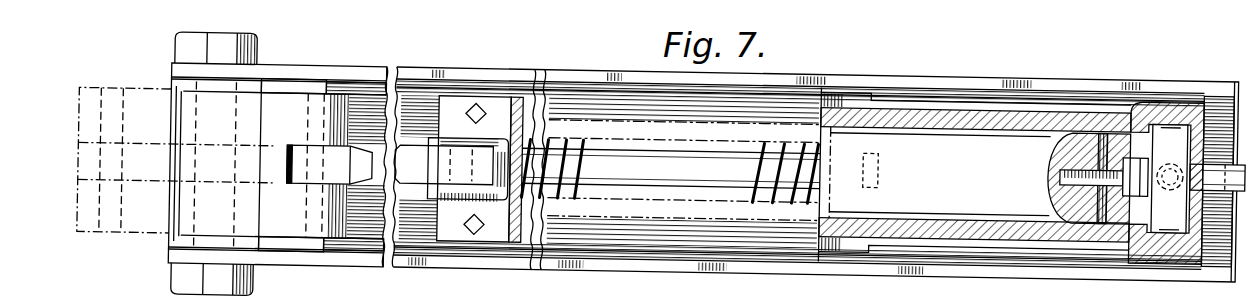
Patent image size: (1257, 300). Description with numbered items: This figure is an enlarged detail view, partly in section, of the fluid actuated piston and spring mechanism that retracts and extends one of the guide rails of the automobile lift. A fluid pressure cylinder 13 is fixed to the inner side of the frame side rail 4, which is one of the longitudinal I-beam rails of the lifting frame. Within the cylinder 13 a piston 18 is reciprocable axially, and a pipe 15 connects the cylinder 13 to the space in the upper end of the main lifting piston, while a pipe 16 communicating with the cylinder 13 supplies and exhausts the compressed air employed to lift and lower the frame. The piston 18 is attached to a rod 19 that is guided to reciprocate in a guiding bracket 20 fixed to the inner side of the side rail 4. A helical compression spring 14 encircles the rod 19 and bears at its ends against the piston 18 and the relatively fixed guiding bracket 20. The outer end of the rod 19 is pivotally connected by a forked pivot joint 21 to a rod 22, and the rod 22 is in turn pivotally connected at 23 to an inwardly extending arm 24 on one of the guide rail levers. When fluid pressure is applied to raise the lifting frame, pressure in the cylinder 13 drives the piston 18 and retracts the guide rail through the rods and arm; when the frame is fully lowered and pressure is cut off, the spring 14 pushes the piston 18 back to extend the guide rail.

The longitudinal rail 4 is at (418, 70).
The fluid pressure cylinder 13 is at (905, 101).
The spring 14 is at (754, 138).
The pipe 15 is at (1171, 150).
The pipe 16 is at (1233, 172).
The piston 18 is at (662, 117).
The rod 19 is at (671, 168).
The guiding bracket 20 is at (508, 103).
The forked pivot joint 21 is at (462, 136).
The rod 22 is at (451, 166).
The pivotal connection 23 is at (302, 149).
The inwardly extending arm 24 is at (293, 225).